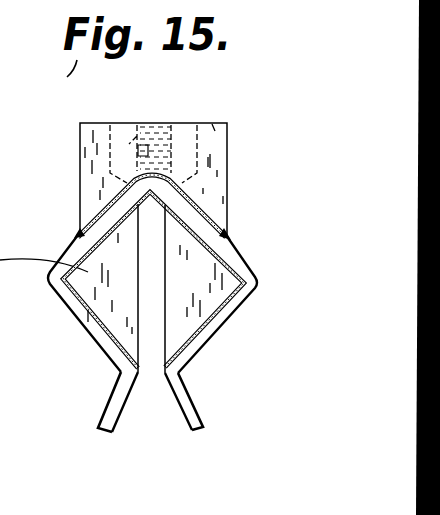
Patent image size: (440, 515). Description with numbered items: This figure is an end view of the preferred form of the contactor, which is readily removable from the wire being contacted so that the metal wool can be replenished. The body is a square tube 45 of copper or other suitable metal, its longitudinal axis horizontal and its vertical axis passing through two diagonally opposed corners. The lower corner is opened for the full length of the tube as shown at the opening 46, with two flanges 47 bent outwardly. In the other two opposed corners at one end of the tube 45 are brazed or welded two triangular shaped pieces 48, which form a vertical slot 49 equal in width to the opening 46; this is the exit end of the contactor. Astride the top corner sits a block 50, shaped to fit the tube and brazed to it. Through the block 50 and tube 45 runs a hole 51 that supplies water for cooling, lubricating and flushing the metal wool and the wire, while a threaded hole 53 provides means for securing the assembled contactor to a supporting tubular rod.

The square tube 45 is at (76, 328).
The opening 46 is at (154, 380).
The flanges 47 is at (107, 410).
The triangular shaped pieces 48 is at (220, 282).
The vertical slot 49 is at (153, 298).
The block 50 is at (185, 124).
The hole 51 is at (93, 123).
The threaded hole 53 is at (139, 131).